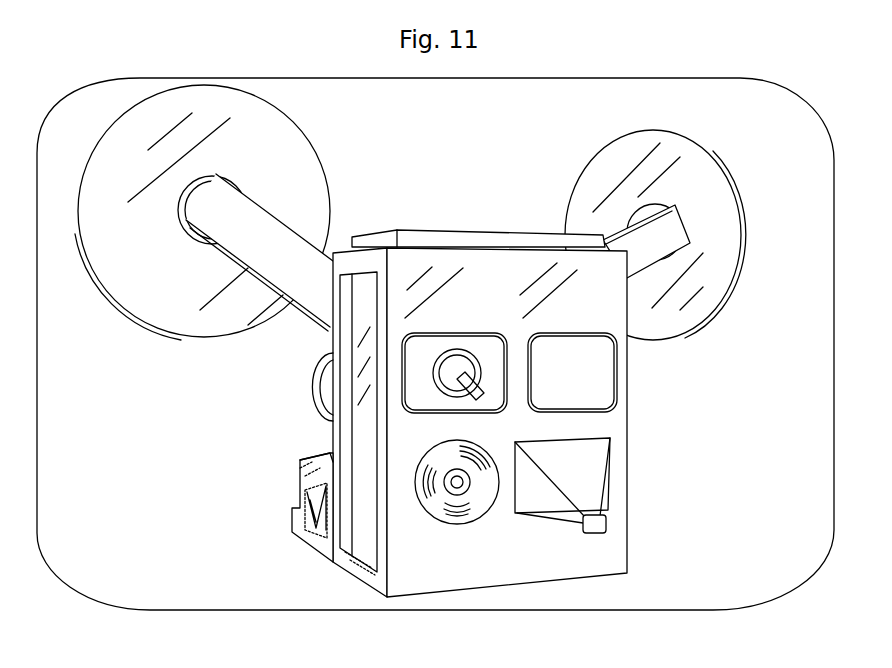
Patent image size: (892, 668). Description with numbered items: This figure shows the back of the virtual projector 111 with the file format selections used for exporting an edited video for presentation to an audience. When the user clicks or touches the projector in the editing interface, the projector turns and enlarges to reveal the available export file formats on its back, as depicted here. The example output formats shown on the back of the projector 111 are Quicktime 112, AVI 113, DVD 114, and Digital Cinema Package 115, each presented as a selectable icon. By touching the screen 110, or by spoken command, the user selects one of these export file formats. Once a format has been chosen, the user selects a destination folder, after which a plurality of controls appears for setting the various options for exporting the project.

The screen 110 is at (37, 501).
The projector 111 is at (628, 402).
The Quicktime format selection 112 is at (463, 333).
The AVI format selection 113 is at (587, 333).
The DVD format selection 114 is at (457, 527).
The Digital Cinema Package format selection 115 is at (530, 517).